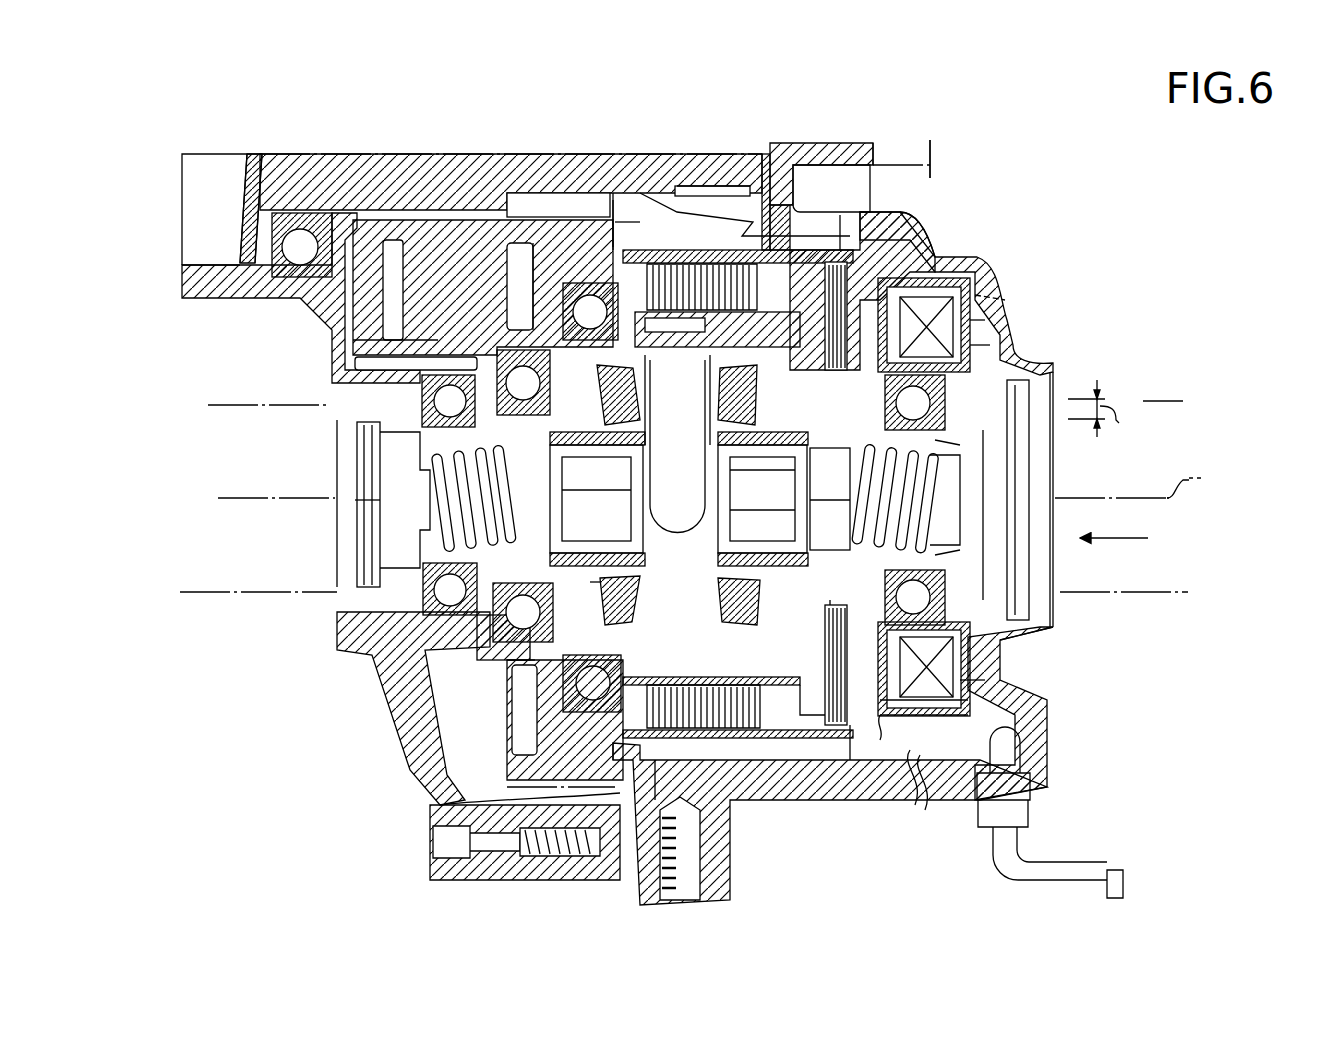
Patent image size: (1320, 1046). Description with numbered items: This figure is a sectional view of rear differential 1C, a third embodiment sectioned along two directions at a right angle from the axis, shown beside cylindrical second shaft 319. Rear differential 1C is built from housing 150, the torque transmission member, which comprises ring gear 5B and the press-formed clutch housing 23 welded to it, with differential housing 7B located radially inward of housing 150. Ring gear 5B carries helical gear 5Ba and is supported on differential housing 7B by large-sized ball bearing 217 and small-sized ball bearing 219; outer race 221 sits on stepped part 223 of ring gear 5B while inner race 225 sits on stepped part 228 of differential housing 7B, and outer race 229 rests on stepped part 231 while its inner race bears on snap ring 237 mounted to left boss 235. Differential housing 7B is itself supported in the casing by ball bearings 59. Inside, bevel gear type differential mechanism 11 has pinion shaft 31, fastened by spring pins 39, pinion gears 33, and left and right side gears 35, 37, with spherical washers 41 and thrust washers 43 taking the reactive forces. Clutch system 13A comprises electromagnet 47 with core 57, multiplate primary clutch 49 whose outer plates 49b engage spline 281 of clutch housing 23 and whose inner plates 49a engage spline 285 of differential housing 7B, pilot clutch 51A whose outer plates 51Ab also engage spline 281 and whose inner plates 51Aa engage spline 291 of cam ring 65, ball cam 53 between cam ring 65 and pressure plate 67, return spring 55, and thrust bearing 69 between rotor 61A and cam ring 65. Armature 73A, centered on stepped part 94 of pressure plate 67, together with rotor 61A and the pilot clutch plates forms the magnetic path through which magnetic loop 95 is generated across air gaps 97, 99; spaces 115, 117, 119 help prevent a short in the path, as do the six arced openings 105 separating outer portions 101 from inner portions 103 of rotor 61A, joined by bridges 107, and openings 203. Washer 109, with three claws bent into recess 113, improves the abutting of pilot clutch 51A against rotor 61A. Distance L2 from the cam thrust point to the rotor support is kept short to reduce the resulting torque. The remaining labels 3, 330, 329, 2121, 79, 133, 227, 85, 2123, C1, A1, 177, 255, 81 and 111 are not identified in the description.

The rear differential 1C is at (882, 121).
The housing 3 is at (343, 128).
The second shaft 319 is at (400, 154).
The partition wall 330 is at (200, 190).
The flange 329 is at (200, 264).
The axis 2121 is at (259, 400).
The ball bearing 59 is at (355, 388).
The left boss 235 is at (357, 437).
The damper 79 is at (420, 515).
The snap ring 237 is at (410, 535).
The small-sized ball bearing 219 is at (495, 352).
The outer race 229 is at (498, 647).
The stepped part 231 is at (500, 680).
The large-sized ball bearing 217 is at (563, 308).
The stepped part 223 is at (572, 715).
The ring gear 5B is at (500, 248).
The helical gear 5Ba is at (540, 203).
The outer plates 49b is at (608, 210).
The inner plates 49a is at (630, 280).
The differential housing 7B is at (497, 332).
The stepped part 228 is at (565, 316).
The inner race 225 is at (610, 587).
The thrust washers 43 is at (590, 457).
The carrier pin 133 is at (596, 498).
The spring pins 39 is at (679, 496).
The pinion gear 33 is at (677, 446).
The pinion shaft 31 is at (685, 507).
The return spring 55 is at (762, 471).
The pressure plate 67 is at (762, 498).
The ball cam 53 is at (830, 499).
The thrust bearing 69 is at (830, 514).
The electromagnet 47 is at (1000, 160).
The spherical washers 41 is at (718, 395).
The left side gear 35 is at (625, 610).
The right side gear 37 is at (727, 598).
The spline 285 is at (716, 252).
The spline 281 is at (752, 313).
The clutch plates 227 is at (645, 675).
The spline 291 is at (800, 634).
The pilot clutch 51A is at (833, 162).
The stepped part 94 is at (780, 202).
The clutch system 13A is at (918, 195).
The hydraulic chamber 85 is at (808, 800).
The space 119 is at (843, 210).
The armature 73A is at (825, 274).
The space 117 is at (850, 264).
The air gap 99 is at (945, 254).
The rotor 61A is at (877, 280).
The core 57 is at (947, 267).
The magnetic loop 95 is at (1002, 304).
The bridges 107 is at (972, 318).
The openings 203 is at (972, 343).
The axis 2123 is at (1166, 400).
The distance L2 is at (1107, 414).
The center axis C1 is at (1195, 481).
The axial direction A1 is at (1131, 540).
The air gap 97 is at (935, 395).
The bearing 177 is at (925, 585).
The space 115 is at (905, 436).
The spring seat 255 is at (917, 465).
The cam ring 65 is at (920, 480).
The output flange 81 is at (985, 610).
The inner plates 51Aa is at (1045, 629).
The inner portions 103 is at (955, 649).
The arced openings 105 is at (965, 679).
The outer portions 101 is at (900, 713).
The washer 109 is at (885, 732).
The brake plate 111 is at (850, 723).
The recess 113 is at (908, 790).
The outer plates 51Ab is at (865, 768).
The outer race 221 is at (632, 756).
The differential mechanism 11 is at (696, 738).
The housing 150 is at (640, 228).
The clutch housing 23 is at (640, 228).
The primary clutch 49 is at (668, 223).